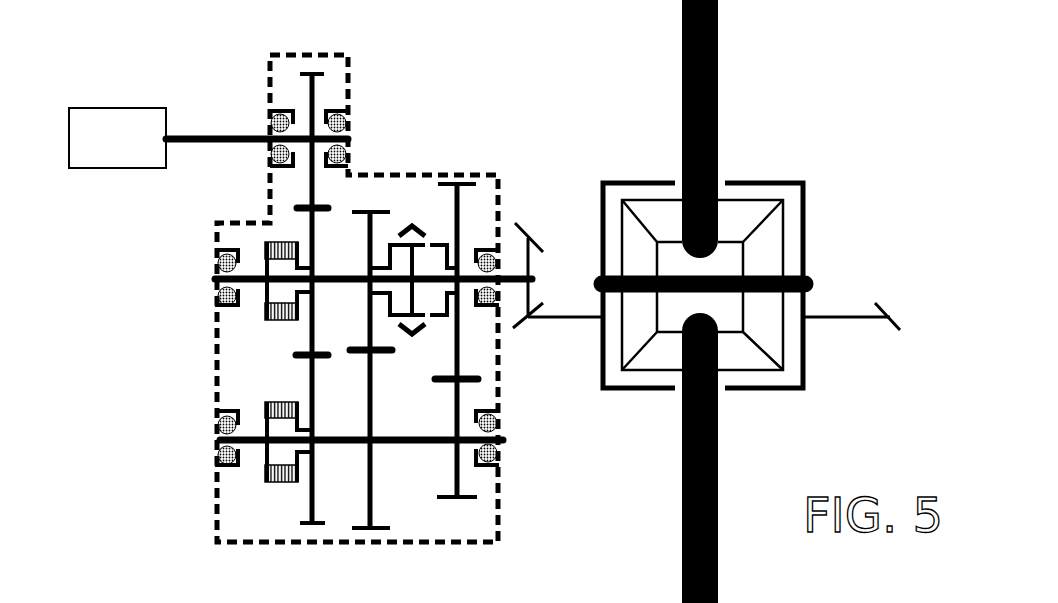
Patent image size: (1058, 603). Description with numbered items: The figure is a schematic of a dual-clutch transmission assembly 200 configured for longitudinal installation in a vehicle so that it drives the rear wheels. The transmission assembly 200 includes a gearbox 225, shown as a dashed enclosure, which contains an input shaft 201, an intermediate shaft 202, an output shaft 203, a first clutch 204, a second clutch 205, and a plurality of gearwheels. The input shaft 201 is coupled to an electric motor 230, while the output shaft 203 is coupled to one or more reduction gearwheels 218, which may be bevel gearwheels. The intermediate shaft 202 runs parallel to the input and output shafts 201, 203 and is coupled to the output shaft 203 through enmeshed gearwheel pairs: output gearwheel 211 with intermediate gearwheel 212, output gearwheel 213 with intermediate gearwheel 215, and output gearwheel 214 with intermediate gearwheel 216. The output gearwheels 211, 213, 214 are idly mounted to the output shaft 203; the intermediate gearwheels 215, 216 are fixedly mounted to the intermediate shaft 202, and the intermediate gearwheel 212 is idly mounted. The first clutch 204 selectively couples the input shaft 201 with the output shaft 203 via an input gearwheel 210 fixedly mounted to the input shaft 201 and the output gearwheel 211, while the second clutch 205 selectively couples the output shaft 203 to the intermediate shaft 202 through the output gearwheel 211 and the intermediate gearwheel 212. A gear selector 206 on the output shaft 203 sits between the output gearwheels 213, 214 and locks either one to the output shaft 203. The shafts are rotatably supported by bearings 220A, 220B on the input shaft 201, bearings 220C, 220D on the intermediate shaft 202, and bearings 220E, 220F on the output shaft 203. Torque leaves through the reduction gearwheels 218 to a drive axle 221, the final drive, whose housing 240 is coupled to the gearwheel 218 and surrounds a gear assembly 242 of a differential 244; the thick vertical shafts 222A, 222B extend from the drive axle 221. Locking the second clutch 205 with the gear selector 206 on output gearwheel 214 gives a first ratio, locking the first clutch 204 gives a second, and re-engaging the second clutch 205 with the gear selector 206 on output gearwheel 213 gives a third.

The transmission assembly 200 is at (792, 134).
The input shaft 201 is at (200, 137).
The intermediate shaft 202 is at (250, 437).
The output shaft 203 is at (253, 277).
The first clutch 204 is at (281, 241).
The second clutch 205 is at (286, 400).
The gear selector 206 is at (413, 226).
The input gearwheel 210 is at (313, 100).
The output gearwheel 211 is at (314, 245).
The intermediate gearwheel 212 is at (313, 515).
The output gearwheel 213 is at (372, 212).
The output gearwheel 214 is at (458, 184).
The intermediate gearwheel 215 is at (372, 515).
The intermediate gearwheel 216 is at (453, 421).
The reduction gearwheels 218 is at (548, 298).
The bearing 220A is at (279, 122).
The bearing 220B is at (339, 122).
The bearing 220C is at (222, 458).
The bearing 220D is at (503, 456).
The bearing 220E is at (222, 265).
The bearing 220F is at (498, 237).
The drive axle 221 is at (655, 168).
The first half shaft 222A is at (682, 75).
The second half shaft 222B is at (682, 525).
The gearbox 225 is at (196, 499).
The electric motor 230 is at (117, 138).
The housing 240 is at (806, 190).
The gear assembly 242 is at (768, 255).
The differential 244 is at (806, 335).